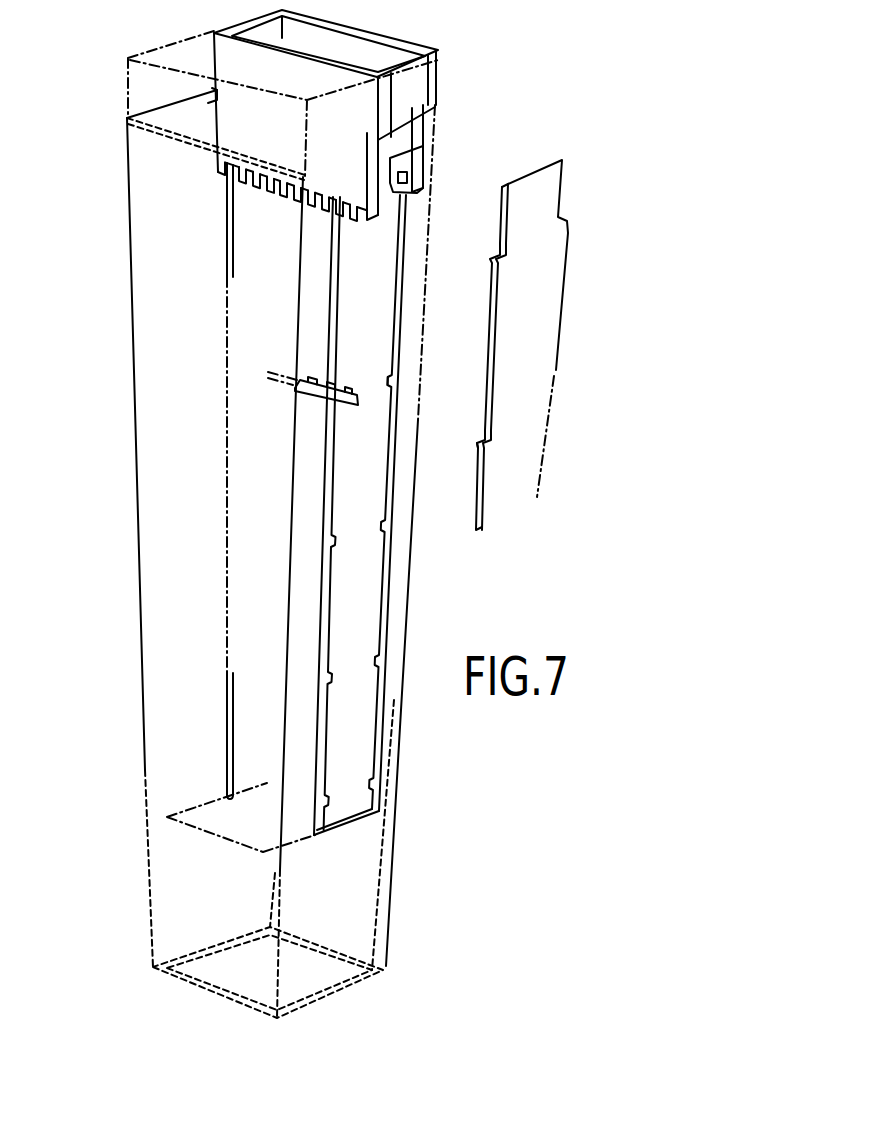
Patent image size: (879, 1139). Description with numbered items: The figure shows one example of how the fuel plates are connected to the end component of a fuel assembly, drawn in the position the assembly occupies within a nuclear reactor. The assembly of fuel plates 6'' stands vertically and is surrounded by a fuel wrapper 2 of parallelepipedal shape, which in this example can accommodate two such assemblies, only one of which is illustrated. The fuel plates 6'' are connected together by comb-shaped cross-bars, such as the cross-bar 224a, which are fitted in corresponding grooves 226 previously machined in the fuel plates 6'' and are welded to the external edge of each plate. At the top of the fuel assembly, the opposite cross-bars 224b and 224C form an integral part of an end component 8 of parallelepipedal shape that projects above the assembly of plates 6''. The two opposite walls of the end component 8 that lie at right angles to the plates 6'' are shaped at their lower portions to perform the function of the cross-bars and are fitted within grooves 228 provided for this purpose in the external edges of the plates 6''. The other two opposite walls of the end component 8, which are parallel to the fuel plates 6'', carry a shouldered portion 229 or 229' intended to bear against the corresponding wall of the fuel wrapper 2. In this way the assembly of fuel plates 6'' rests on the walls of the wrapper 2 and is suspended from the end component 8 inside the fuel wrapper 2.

The fuel wrapper 2 is at (125, 117).
The end component 8 is at (403, 40).
The shouldered portion 229' is at (125, 71).
The shouldered portion 229 is at (440, 138).
The cross-bar 224C is at (438, 169).
The cross-bar 224b is at (263, 187).
The comb-shaped cross-bar 224a is at (320, 392).
The grooves 226 is at (476, 436).
The grooves 228 is at (506, 261).
The fuel plates 6'' is at (402, 515).